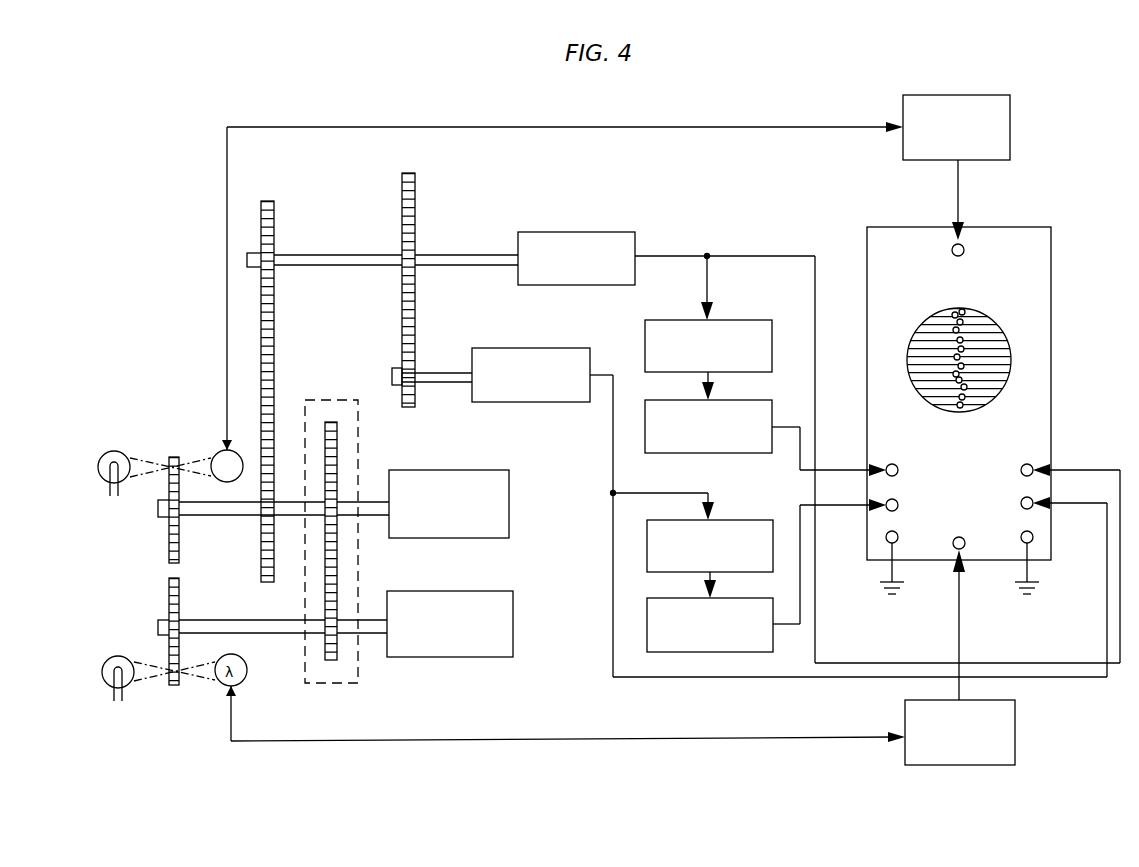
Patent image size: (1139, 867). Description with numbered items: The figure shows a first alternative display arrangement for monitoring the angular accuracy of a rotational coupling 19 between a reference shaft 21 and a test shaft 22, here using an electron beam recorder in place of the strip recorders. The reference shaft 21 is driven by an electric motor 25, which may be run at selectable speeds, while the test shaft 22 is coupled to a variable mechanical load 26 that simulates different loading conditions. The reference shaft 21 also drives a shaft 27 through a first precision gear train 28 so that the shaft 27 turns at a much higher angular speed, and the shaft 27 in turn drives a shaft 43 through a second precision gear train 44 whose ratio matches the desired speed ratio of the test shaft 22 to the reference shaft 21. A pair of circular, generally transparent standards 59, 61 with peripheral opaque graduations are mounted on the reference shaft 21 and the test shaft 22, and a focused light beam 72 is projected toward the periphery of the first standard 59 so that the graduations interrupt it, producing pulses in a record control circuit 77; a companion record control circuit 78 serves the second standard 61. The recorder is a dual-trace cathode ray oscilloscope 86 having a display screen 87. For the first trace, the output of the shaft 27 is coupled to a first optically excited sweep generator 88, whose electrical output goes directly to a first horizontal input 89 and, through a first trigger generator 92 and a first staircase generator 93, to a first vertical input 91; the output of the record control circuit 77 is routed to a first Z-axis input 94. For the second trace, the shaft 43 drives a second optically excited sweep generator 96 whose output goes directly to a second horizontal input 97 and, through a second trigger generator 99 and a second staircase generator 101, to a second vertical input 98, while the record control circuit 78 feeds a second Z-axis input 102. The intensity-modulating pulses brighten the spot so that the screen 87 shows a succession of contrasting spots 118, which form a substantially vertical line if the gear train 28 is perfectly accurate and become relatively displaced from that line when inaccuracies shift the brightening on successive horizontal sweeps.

The rotational coupling 19 is at (368, 688).
The reference shaft 21 is at (246, 518).
The test shaft 22 is at (262, 618).
The electric motor 25 is at (509, 490).
The variable mechanical load 26 is at (513, 609).
The shaft 27 is at (446, 254).
The first precision gear train 28 is at (290, 322).
The shaft 43 is at (436, 385).
The second precision gear train 44 is at (428, 333).
The standard 59 is at (169, 546).
The standard 61 is at (169, 592).
The focused light beam 72 is at (136, 458).
The record control circuit 77 is at (903, 148).
The record control circuit 78 is at (1015, 722).
The cathode ray oscilloscope 86 is at (1060, 274).
The display screen 87 is at (1003, 355).
The first optically excited sweep generator 88 is at (603, 232).
The first horizontal input 89 is at (1033, 466).
The first vertical input 91 is at (886, 466).
The first trigger generator 92 is at (740, 320).
The first staircase generator 93 is at (760, 400).
The first Z-axis input 94 is at (964, 248).
The second optically excited sweep generator 96 is at (540, 348).
The second horizontal input 97 is at (1033, 508).
The second vertical input 98 is at (887, 510).
The second trigger generator 99 is at (740, 520).
The second staircase generator 101 is at (760, 652).
The second Z-axis input 102 is at (953, 543).
The contrasting spots 118 is at (945, 323).